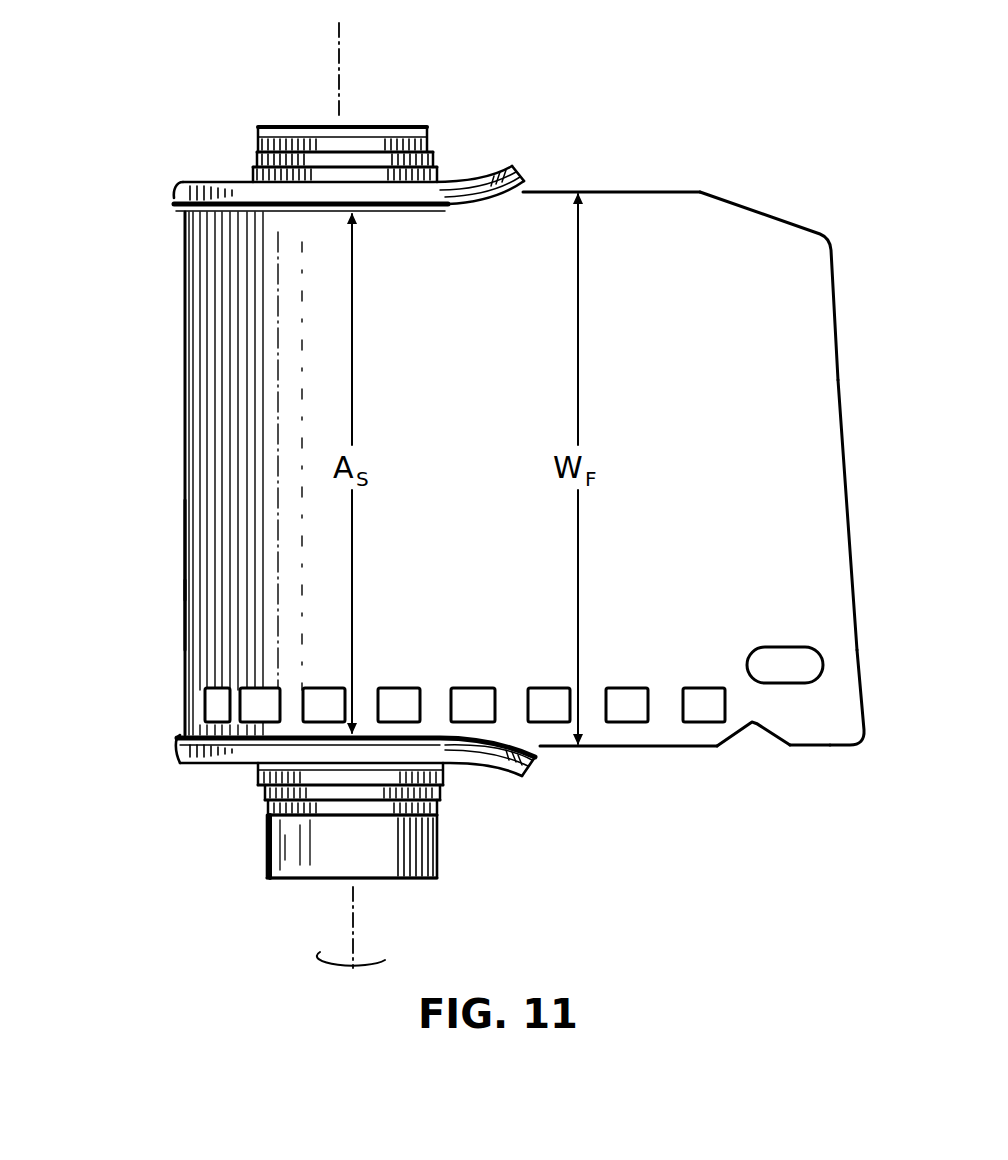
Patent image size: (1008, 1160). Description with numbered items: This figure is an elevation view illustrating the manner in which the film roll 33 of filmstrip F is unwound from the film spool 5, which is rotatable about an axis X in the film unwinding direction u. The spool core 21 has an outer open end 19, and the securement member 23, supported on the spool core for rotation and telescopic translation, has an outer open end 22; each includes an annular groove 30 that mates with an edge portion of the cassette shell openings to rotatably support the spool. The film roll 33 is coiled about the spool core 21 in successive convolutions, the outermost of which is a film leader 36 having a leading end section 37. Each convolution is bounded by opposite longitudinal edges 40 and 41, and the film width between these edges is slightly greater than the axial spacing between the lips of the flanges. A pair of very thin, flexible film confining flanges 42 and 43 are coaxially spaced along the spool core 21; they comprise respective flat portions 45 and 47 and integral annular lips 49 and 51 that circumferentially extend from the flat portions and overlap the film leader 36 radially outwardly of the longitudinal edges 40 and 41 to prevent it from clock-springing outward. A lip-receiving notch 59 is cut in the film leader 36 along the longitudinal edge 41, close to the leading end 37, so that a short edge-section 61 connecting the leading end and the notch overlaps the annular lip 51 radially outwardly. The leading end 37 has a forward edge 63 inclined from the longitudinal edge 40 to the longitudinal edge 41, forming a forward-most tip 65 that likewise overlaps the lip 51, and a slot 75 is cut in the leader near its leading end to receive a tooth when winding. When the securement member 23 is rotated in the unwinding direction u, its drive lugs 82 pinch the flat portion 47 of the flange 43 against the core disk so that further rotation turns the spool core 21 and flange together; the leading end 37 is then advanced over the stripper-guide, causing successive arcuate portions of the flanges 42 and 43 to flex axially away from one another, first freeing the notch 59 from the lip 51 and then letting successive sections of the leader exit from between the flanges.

The film spool 5 is at (186, 614).
The outer open end of spool core 19 is at (390, 127).
The spool core 21 is at (255, 128).
The outer open end of securement member 22 is at (306, 880).
The securement member 23 is at (276, 852).
The annular groove 30 is at (430, 146).
The film roll 33 is at (186, 546).
The film leader 36 is at (188, 437).
The leading end section 37 is at (845, 392).
The longitudinal edge 40 is at (565, 192).
The longitudinal edge 41 is at (553, 757).
The upper film confining flange 42 is at (178, 187).
The lower film confining flange 43 is at (182, 764).
The flat portion of upper flange 45 is at (218, 172).
The flat portion of lower flange 47 is at (218, 770).
The annular lip of upper flange 49 is at (183, 193).
The annular lip of lower flange 51 is at (186, 750).
The lip-receiving notch 59 is at (746, 722).
The edge-section 61 is at (816, 752).
The forward edge 63 is at (848, 446).
The forward-most tip 65 is at (846, 735).
The slot 75 is at (782, 650).
The drive lugs 82 is at (262, 770).
The filmstrip F is at (216, 291).
The axis X is at (338, 46).
The film unwinding direction u is at (366, 950).